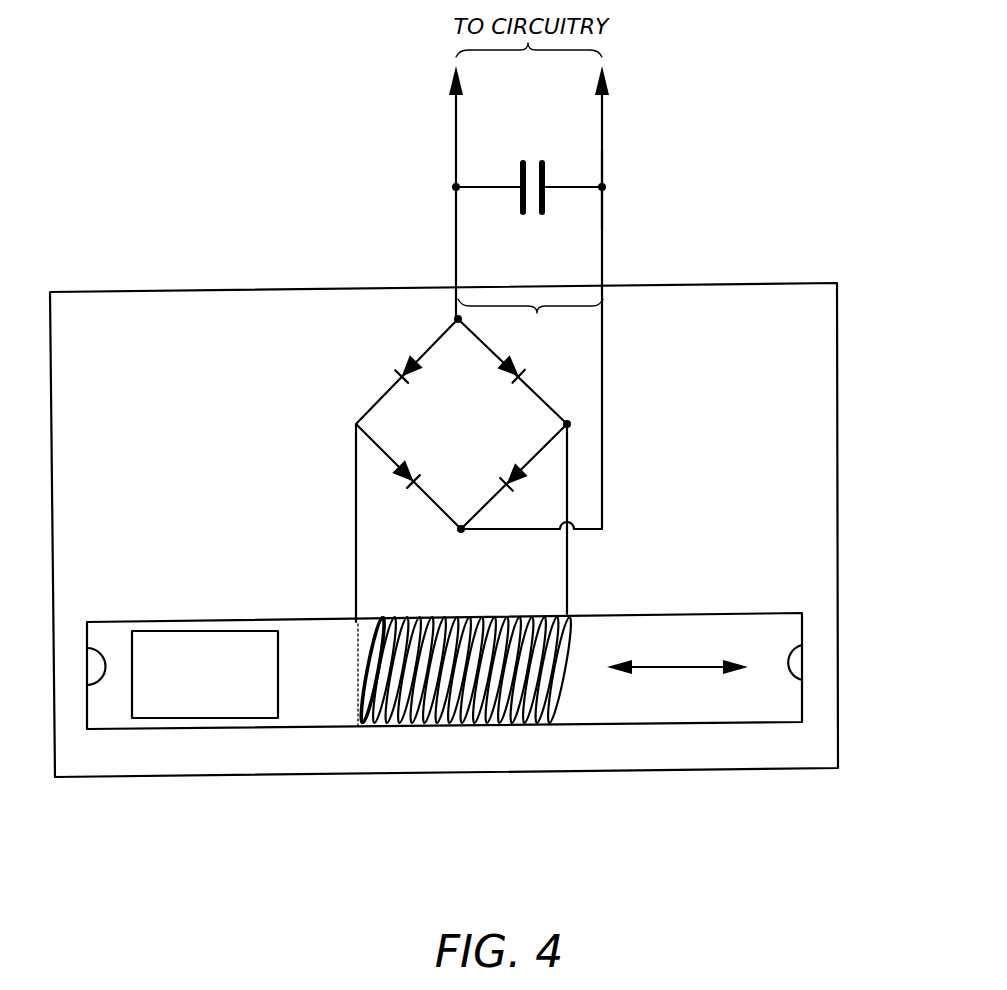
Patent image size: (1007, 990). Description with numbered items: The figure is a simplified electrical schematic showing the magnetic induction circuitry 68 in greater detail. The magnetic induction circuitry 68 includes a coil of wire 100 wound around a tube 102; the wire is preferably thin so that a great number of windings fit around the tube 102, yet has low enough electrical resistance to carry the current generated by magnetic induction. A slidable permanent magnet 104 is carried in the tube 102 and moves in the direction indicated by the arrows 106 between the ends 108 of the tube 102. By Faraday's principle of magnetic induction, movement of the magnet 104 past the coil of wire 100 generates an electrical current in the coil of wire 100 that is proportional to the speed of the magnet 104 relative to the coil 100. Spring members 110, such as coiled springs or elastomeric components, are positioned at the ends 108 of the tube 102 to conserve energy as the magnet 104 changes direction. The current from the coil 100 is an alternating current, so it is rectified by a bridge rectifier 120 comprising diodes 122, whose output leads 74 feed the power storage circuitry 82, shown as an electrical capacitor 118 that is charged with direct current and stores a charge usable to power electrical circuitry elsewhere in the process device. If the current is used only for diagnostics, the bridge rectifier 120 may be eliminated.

The magnetic induction circuitry 68 is at (210, 777).
The rectifier output leads 74 is at (530, 322).
The power storage circuitry 82 is at (628, 182).
The coil of wire 100 is at (503, 723).
The tube 102 is at (660, 613).
The permanent magnet 104 is at (218, 650).
The arrows 106 is at (681, 670).
The ends of tube 108 is at (88, 631).
The spring members 110 is at (97, 686).
The electrical capacitor 118 is at (520, 176).
The bridge rectifier 120 is at (416, 424).
The diodes 122 is at (405, 376).